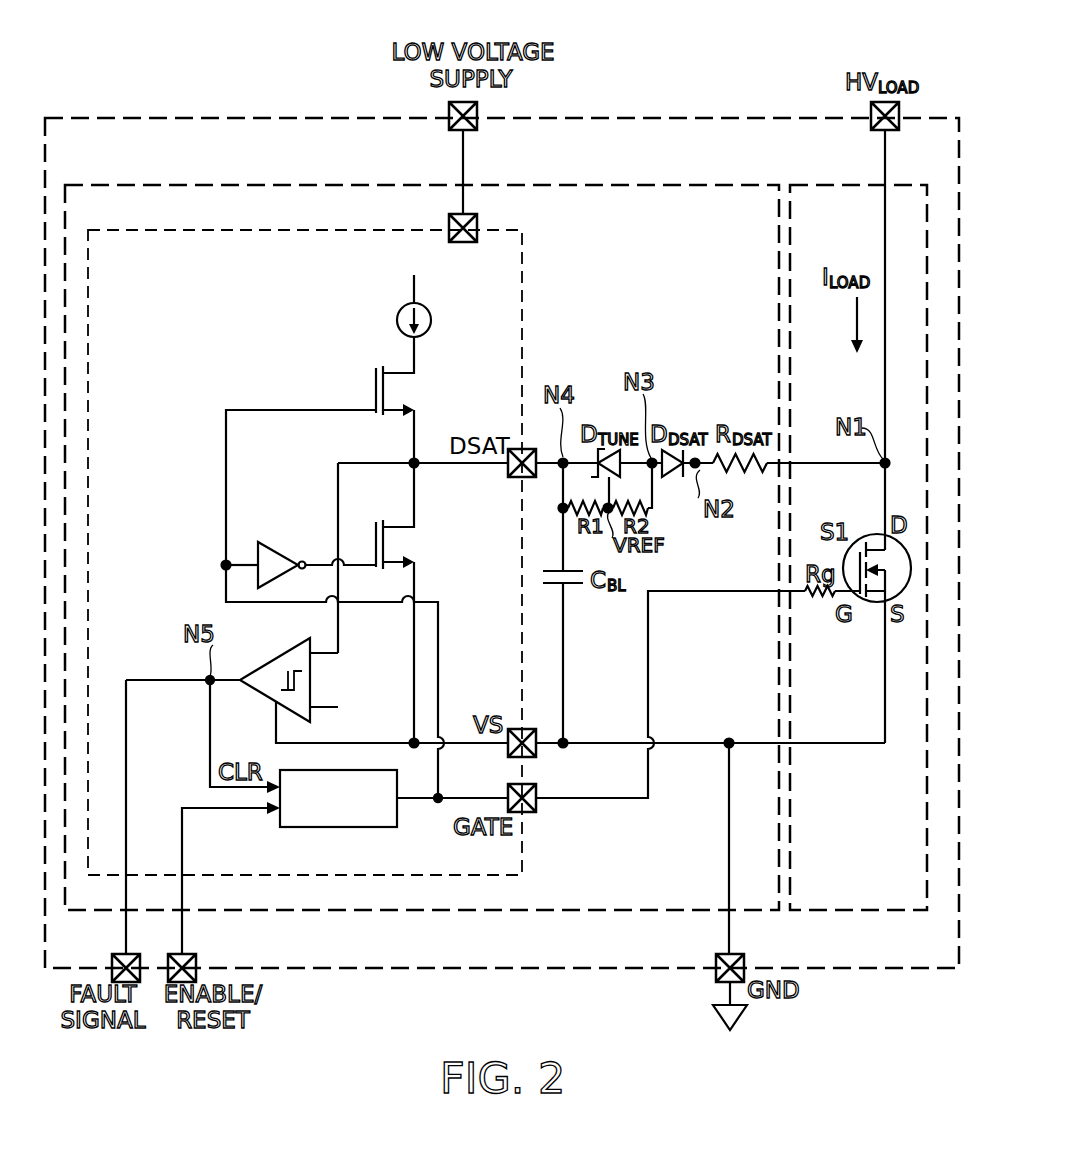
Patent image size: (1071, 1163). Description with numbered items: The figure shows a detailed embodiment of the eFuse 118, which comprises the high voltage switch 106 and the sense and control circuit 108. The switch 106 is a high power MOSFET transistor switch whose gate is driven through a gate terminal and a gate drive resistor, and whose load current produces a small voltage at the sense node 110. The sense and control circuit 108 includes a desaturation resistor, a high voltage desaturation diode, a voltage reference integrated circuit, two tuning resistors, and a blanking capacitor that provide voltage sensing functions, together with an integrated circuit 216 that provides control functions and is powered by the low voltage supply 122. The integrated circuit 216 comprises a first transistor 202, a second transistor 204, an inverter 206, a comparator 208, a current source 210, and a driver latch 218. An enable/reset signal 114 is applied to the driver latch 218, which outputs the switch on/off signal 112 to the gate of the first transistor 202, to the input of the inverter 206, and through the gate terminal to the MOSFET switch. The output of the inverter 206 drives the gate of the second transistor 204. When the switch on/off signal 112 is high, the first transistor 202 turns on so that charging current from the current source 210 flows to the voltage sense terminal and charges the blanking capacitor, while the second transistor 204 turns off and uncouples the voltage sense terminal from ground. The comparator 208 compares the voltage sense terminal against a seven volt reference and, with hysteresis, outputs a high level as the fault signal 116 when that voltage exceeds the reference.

The eFuse 118 is at (172, 118).
The sense and control circuit 108 is at (368, 186).
The high voltage switch 106 is at (832, 186).
The integrated circuit 216 is at (528, 250).
The low voltage supply 122 is at (466, 160).
The current source 210 is at (431, 308).
The first transistor 202 is at (376, 386).
The second transistor 204 is at (376, 532).
The inverter 206 is at (275, 541).
The comparator 208 is at (263, 662).
The fault signal 116 is at (168, 679).
The enable/reset signal 114 is at (204, 810).
The driver latch 218 is at (345, 828).
The switch on/off signal 112 is at (650, 786).
The sense node 110 is at (883, 467).